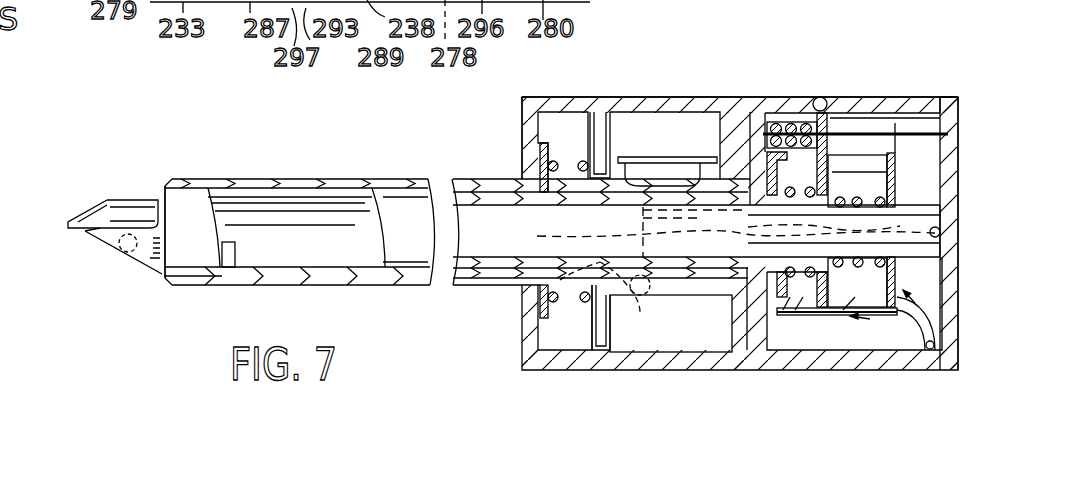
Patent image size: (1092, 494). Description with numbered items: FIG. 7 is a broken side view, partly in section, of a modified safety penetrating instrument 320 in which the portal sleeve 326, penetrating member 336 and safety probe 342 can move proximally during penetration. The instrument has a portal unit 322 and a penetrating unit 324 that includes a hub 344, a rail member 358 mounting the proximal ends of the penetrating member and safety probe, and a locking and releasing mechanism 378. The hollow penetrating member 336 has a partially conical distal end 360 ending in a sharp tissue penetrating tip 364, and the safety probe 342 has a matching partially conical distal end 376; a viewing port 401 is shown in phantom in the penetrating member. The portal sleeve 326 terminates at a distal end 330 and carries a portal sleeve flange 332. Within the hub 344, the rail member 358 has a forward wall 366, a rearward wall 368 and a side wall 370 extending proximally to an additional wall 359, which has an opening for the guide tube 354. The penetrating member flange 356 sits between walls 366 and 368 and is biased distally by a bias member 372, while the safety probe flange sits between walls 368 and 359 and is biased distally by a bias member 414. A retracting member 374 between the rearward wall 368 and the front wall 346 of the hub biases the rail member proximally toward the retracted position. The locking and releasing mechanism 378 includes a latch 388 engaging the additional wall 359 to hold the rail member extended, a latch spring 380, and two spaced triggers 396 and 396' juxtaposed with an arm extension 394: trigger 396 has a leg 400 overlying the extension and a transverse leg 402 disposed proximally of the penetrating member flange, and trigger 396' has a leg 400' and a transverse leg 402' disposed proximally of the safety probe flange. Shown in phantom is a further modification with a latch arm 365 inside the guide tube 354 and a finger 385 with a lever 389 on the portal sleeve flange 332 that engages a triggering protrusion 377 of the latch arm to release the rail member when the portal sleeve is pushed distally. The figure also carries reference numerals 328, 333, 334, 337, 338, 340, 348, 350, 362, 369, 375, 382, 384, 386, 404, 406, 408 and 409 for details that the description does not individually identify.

The safety penetrating instrument 320 is at (503, 170).
The portal unit 322 is at (712, 78).
The penetrating unit 324 is at (987, 80).
The portal sleeve 326 is at (202, 178).
The seal cavity 328 is at (508, 100).
The portal sleeve distal end 330 is at (168, 188).
The portal sleeve flange 332 is at (545, 143).
The channel wall 333 is at (620, 125).
The body side wall 334 is at (522, 125).
The penetrating member 336 is at (277, 280).
The lower seal cavity 337 is at (550, 300).
The lower cavity 338 is at (707, 343).
The cup 340 is at (637, 157).
The safety probe 342 is at (105, 197).
The hub 344 is at (963, 103).
The front wall 346 is at (767, 125).
The right wall 348 is at (964, 97).
The top right wall 350 is at (937, 122).
The guide tube 354 is at (940, 217).
The penetrating member flange 356 is at (763, 150).
The rail member 358 is at (900, 157).
The additional wall 359 is at (893, 262).
The distal end 360 is at (127, 253).
The tube end face 362 is at (160, 277).
The tissue penetrating tip 364 is at (87, 231).
The latch arm 365 is at (707, 235).
The rail member forward wall 366 is at (655, 233).
The rail member rearward wall 368 is at (948, 137).
The outlet 369 is at (953, 232).
The side wall 370 is at (815, 103).
The bias member 372 is at (832, 172).
The retracting member 374 is at (783, 117).
The bearings 375 is at (908, 135).
The distal end 376 is at (68, 222).
The triggering protrusion 377 is at (647, 290).
The locking and releasing mechanism 378 is at (920, 367).
The latch spring 380 is at (938, 340).
The valve plate 382 is at (867, 323).
The elbow inner wall 384 is at (933, 353).
The finger 385 is at (560, 280).
The elbow outer wall 386 is at (928, 305).
The latch 388 is at (905, 295).
The lever 389 is at (640, 312).
The arm extension 394 is at (772, 330).
The trigger 396 is at (787, 367).
The trigger 396' is at (891, 354).
The leg 400 is at (764, 355).
The leg 400' is at (843, 382).
The viewing port 401 is at (120, 252).
The leg 402 is at (829, 342).
The leg 402' is at (904, 375).
The piston bar 404 is at (850, 130).
The bearings 406 is at (872, 150).
The chamber top 408 is at (845, 120).
The piston chamber 409 is at (907, 135).
The bias member 414 is at (892, 278).